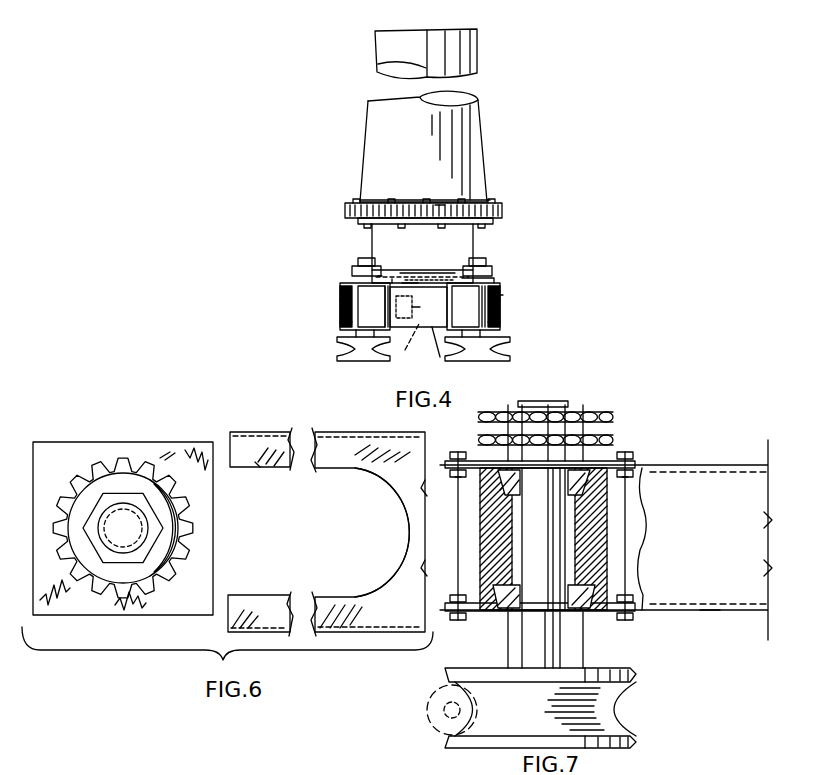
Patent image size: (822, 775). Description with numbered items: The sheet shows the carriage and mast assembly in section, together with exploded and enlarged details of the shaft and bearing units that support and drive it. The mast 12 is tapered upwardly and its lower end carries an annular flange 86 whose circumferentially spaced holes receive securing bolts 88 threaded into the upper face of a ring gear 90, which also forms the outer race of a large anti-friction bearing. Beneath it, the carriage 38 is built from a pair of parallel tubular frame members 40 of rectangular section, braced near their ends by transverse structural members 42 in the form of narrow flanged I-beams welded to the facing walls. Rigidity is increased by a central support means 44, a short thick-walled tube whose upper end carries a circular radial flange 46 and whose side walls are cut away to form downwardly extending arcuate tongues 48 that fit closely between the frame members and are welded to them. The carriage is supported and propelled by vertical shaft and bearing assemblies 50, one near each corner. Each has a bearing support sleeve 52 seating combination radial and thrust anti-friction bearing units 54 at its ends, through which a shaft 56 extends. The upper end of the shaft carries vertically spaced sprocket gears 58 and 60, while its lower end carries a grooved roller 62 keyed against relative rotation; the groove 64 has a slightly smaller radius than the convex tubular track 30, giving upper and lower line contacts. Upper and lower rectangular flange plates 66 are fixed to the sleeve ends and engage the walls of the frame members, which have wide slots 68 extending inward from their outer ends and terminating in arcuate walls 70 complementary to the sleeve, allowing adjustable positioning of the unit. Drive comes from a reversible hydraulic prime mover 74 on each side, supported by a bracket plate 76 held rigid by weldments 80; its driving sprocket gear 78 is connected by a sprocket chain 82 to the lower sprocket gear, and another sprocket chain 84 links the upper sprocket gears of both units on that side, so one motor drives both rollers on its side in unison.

In FIG. 4, the mast 12 is at (480, 140).
In FIG. 7, the tubular track 30 is at (425, 708).
In FIG. 4, the carriage 38 is at (509, 300).
In FIG. 7, the carriage 38 is at (711, 613).
In FIG. 4, the frame member 40 is at (340, 305).
In FIG. 6, the frame member 40 is at (367, 633).
In FIG. 7, the frame member 40 is at (686, 465).
In FIG. 4, the transverse structural member 42 is at (438, 351).
In FIG. 4, the central support means 44 is at (474, 241).
In FIG. 4, the circular radial flange 46 is at (494, 221).
In FIG. 4, the tongue 48 is at (407, 349).
In FIG. 4, the shaft and bearing assembly 50 is at (340, 298).
In FIG. 6, the shaft and bearing assembly 50 is at (175, 600).
In FIG. 7, the shaft and bearing assembly 50 is at (613, 533).
In FIG. 4, the bearing support sleeve 52 is at (345, 326).
In FIG. 7, the bearing support sleeve 52 is at (608, 515).
In FIG. 7, the anti-friction bearing unit 54 is at (600, 468).
In FIG. 4, the shaft 56 is at (500, 335).
In FIG. 6, the shaft 56 is at (105, 518).
In FIG. 7, the shaft 56 is at (548, 403).
In FIG. 4, the sprocket gear 58 is at (350, 268).
In FIG. 6, the sprocket gear 58 is at (123, 462).
In FIG. 7, the sprocket gear 58 is at (610, 415).
In FIG. 4, the sprocket gear 60 is at (495, 280).
In FIG. 7, the sprocket gear 60 is at (612, 438).
In FIG. 4, the grooved roller 62 is at (358, 361).
In FIG. 7, the grooved roller 62 is at (610, 670).
In FIG. 7, the groove 64 is at (610, 730).
In FIG. 6, the flange plate 66 is at (167, 455).
In FIG. 7, the flange plate 66 is at (466, 490).
In FIG. 6, the slot 68 is at (255, 467).
In FIG. 7, the slot 68 is at (624, 482).
In FIG. 6, the arcuate wall 70 is at (392, 486).
In FIG. 4, the prime mover 74 is at (418, 307).
In FIG. 4, the bracket plate 76 is at (410, 282).
In FIG. 4, the driving sprocket gear 78 is at (394, 280).
In FIG. 4, the weldment 80 is at (381, 278).
In FIG. 4, the sprocket chain 82 is at (446, 280).
In FIG. 4, the sprocket chain 84 is at (431, 280).
In FIG. 4, the annular flange 86 is at (440, 205).
In FIG. 4, the securing bolt 88 is at (492, 205).
In FIG. 4, the ring gear 90 is at (500, 208).